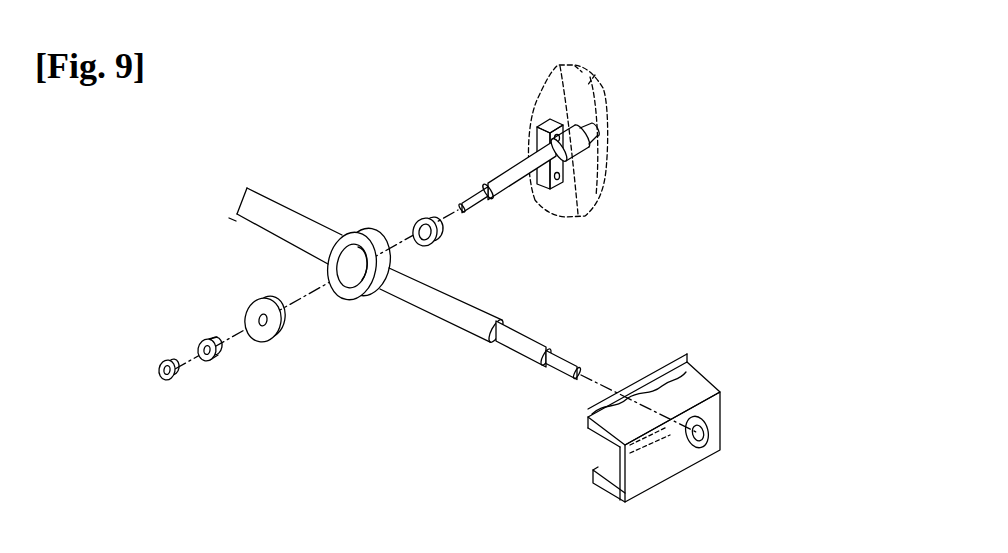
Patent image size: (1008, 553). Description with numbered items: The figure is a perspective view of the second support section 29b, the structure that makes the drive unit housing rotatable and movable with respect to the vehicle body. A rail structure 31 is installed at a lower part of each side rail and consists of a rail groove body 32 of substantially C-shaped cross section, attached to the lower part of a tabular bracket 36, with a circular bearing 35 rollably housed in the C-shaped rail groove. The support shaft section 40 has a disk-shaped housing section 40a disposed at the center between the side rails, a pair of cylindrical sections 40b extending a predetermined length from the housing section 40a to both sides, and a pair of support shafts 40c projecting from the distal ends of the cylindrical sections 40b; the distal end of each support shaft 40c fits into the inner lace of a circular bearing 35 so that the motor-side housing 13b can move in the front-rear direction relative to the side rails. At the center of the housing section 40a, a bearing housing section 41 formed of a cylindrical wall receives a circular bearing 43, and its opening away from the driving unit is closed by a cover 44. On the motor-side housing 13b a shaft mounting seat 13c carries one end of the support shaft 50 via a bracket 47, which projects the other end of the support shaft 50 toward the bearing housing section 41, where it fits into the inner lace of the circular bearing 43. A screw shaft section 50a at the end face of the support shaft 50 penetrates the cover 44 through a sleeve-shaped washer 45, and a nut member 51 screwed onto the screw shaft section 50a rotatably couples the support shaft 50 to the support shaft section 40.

The motor-side housing 13b is at (589, 114).
The shaft mounting seat 13c is at (549, 121).
The second support section 29b is at (535, 262).
The rail structure 31 is at (697, 423).
The rail groove body 32 is at (670, 478).
The circular bearing 35 is at (717, 422).
The tabular bracket 36 is at (689, 366).
The support shaft section 40 is at (413, 274).
The housing section 40a is at (333, 291).
The cylindrical section 40b is at (273, 197).
The support shaft 40c is at (548, 346).
The bearing housing section 41 is at (336, 264).
The circular bearing 43 is at (423, 217).
The cover 44 is at (275, 341).
The sleeve-shaped washer 45 is at (218, 364).
The bracket 47 is at (591, 150).
The support shaft 50 is at (493, 163).
The screw shaft section 50a is at (463, 203).
The nut member 51 is at (172, 381).